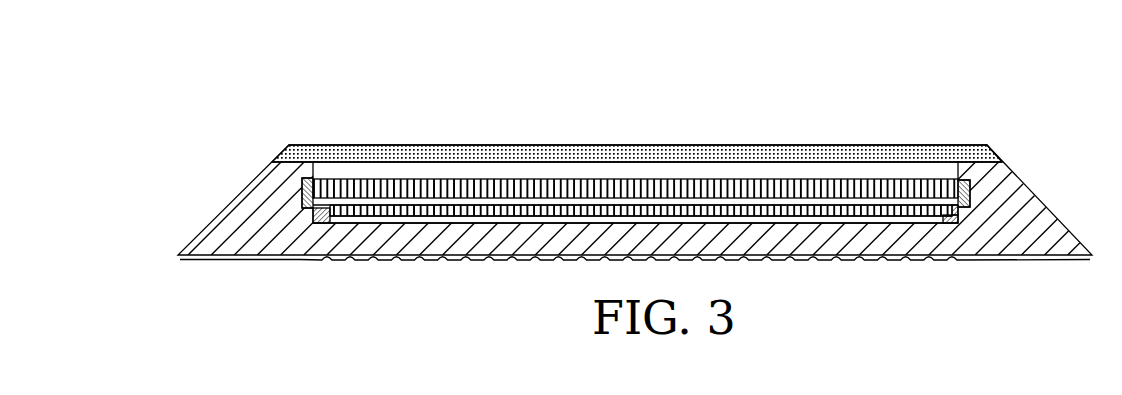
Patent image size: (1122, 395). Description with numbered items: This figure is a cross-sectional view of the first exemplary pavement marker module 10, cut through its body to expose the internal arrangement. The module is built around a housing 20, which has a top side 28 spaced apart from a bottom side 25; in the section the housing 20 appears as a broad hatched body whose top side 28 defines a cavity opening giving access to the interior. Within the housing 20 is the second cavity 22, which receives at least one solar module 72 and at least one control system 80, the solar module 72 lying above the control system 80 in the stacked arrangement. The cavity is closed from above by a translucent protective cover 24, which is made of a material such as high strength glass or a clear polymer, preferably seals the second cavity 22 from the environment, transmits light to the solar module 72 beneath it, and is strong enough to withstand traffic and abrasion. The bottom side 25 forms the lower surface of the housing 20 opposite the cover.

The pavement marker module 10 is at (650, 178).
The housing 20 is at (1030, 205).
The second cavity 22 is at (532, 171).
The protective cover 24 is at (703, 148).
The bottom side 25 is at (1000, 256).
The top side 28 is at (960, 146).
The solar module 72 is at (823, 185).
The control system 80 is at (862, 217).